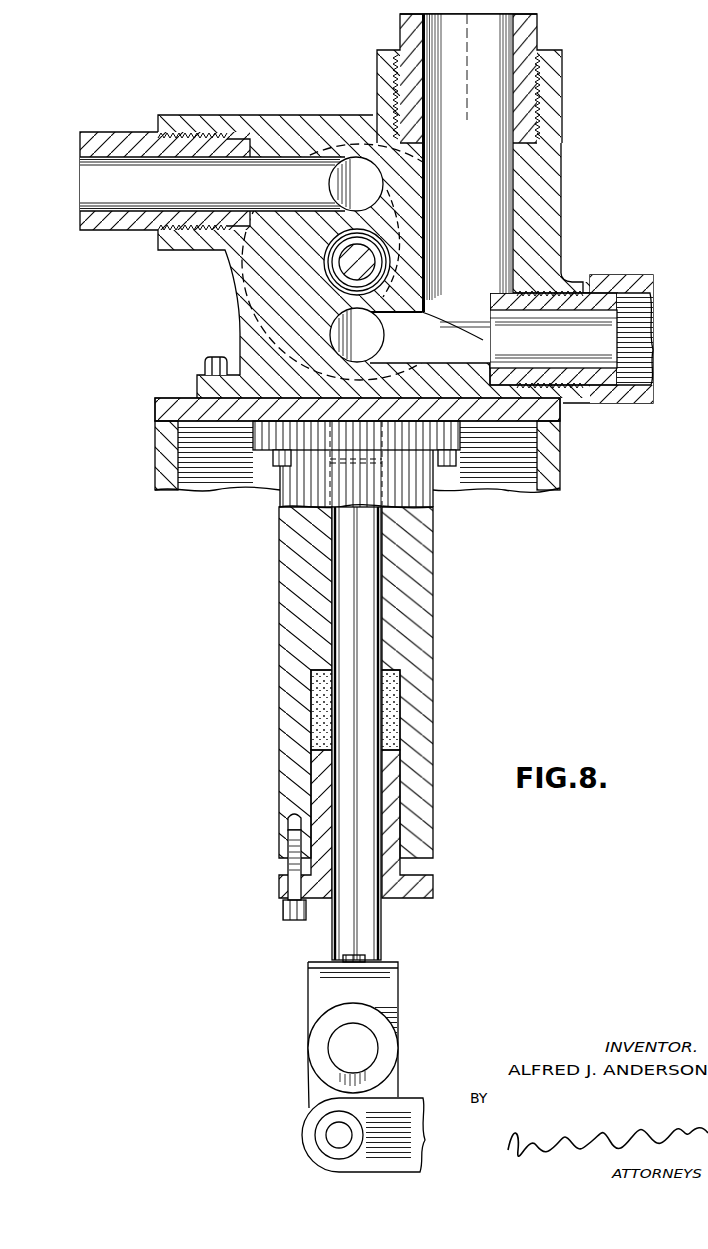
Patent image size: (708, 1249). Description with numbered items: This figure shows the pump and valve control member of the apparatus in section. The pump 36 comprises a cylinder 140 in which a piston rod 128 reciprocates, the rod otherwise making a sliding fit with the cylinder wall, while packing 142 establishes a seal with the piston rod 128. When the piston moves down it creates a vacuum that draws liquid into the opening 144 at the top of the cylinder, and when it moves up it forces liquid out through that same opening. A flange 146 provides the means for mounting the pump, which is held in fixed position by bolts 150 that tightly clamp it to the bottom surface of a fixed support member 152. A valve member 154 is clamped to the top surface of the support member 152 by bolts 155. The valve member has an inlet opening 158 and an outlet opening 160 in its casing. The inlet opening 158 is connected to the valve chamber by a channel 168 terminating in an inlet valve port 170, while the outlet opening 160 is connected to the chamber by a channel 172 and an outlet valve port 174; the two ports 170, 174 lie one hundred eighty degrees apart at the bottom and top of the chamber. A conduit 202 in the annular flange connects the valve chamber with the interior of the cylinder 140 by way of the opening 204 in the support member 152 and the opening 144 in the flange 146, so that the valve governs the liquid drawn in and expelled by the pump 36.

The pump 36 is at (349, 839).
The piston rod 128 is at (379, 943).
The cylinder 140 is at (450, 645).
The packing 142 is at (392, 720).
The opening 144 is at (296, 463).
The flange 146 is at (466, 451).
The bolts 150 is at (274, 463).
The support member 152 is at (156, 448).
The valve member 154 is at (562, 152).
The bolts 155 is at (212, 358).
The inlet opening 158 is at (511, 15).
The outlet opening 160 is at (85, 178).
The channel 168 is at (503, 228).
The inlet valve port 170 is at (343, 338).
The channel 172 is at (264, 158).
The outlet valve port 174 is at (351, 200).
The conduit 202 is at (395, 391).
The opening 204 is at (333, 399).